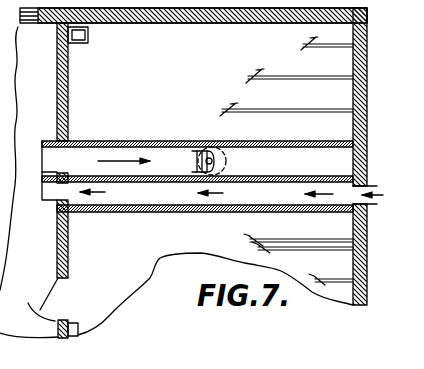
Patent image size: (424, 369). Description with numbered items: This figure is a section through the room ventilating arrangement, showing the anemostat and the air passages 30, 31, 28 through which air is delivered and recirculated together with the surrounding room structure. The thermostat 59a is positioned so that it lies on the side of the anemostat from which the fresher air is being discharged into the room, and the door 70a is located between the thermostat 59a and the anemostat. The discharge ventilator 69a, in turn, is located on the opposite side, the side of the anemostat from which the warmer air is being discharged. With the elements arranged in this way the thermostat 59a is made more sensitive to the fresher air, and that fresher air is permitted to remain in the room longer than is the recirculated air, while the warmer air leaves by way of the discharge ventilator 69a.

The discharge ventilator 69a is at (88, 36).
The inlet pipe 30 is at (173, 128).
The nozzle 31 is at (227, 160).
The return pipe 28 is at (200, 205).
The door 70a is at (38, 293).
The thermostat 59a is at (90, 317).